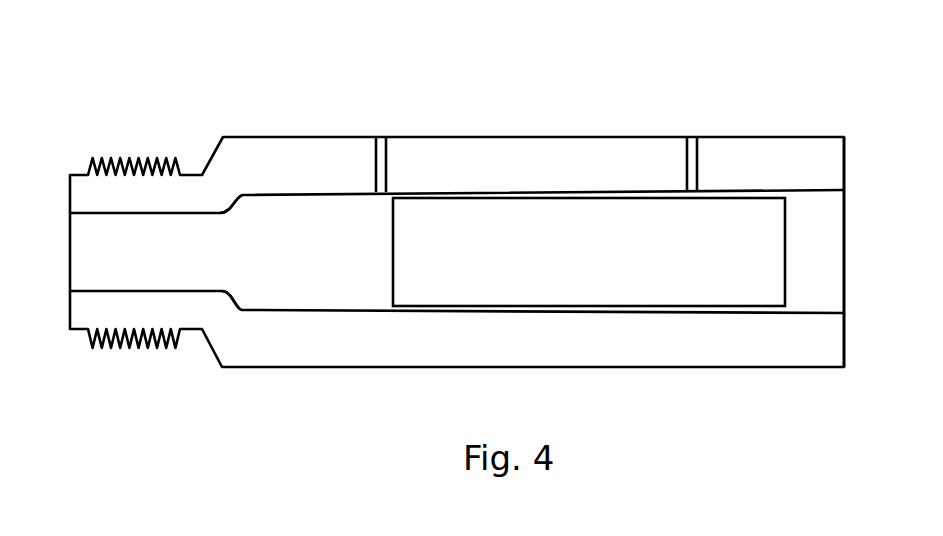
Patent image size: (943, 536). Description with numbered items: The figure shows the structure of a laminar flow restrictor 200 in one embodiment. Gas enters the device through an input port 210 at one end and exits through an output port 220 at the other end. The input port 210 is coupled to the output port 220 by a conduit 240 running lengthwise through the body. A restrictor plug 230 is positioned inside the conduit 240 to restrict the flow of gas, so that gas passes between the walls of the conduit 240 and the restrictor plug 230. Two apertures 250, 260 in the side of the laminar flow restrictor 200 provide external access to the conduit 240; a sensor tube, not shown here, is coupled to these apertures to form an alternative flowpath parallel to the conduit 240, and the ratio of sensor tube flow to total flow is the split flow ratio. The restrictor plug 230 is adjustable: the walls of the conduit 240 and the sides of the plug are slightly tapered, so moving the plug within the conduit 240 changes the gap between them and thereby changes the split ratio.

The laminar flow restrictor 200 is at (252, 86).
The input port 210 is at (70, 268).
The output port 220 is at (845, 266).
The restrictor plug 230 is at (590, 266).
The conduit 240 is at (265, 197).
The aperture 250 is at (381, 143).
The aperture 260 is at (691, 168).